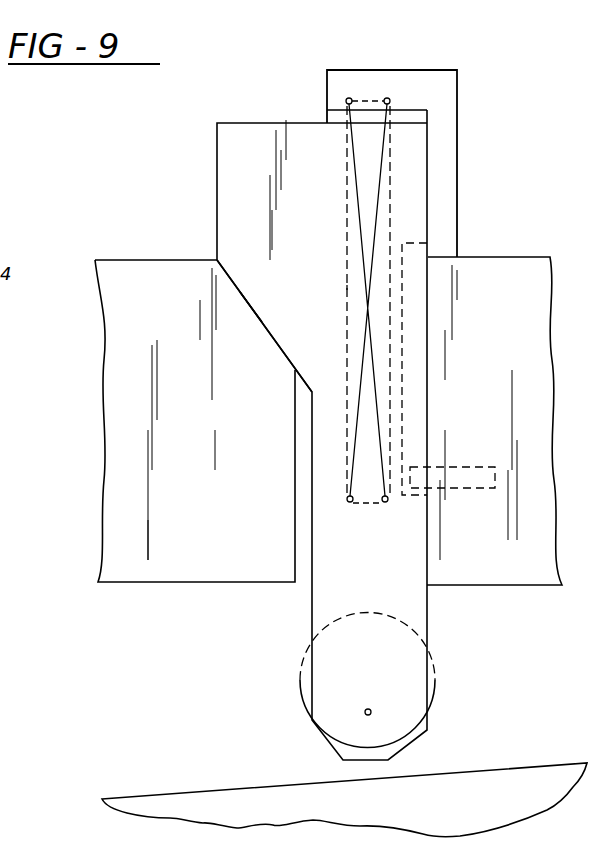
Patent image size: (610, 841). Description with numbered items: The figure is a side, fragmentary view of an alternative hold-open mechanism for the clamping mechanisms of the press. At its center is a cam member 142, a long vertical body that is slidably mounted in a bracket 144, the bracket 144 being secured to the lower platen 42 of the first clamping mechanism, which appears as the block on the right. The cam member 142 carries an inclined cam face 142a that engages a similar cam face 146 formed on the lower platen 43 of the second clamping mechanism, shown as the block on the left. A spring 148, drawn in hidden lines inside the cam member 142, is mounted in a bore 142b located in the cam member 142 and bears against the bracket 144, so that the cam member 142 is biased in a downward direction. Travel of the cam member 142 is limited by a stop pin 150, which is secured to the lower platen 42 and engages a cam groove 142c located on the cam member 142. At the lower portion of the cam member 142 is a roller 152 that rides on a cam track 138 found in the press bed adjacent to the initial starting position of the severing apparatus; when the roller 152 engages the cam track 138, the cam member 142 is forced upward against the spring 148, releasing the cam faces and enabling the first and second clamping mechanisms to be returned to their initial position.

The lower platen 42 is at (525, 283).
The lower platen 43 is at (160, 278).
The cam track 138 is at (455, 780).
The cam member 142 is at (240, 183).
The cam face 142a is at (258, 310).
The bore 142b is at (347, 285).
The cam groove 142c is at (420, 252).
The bracket 144 is at (445, 113).
The cam face 146 is at (272, 340).
The spring 148 is at (330, 115).
The stop pin 150 is at (462, 478).
The roller 152 is at (436, 712).